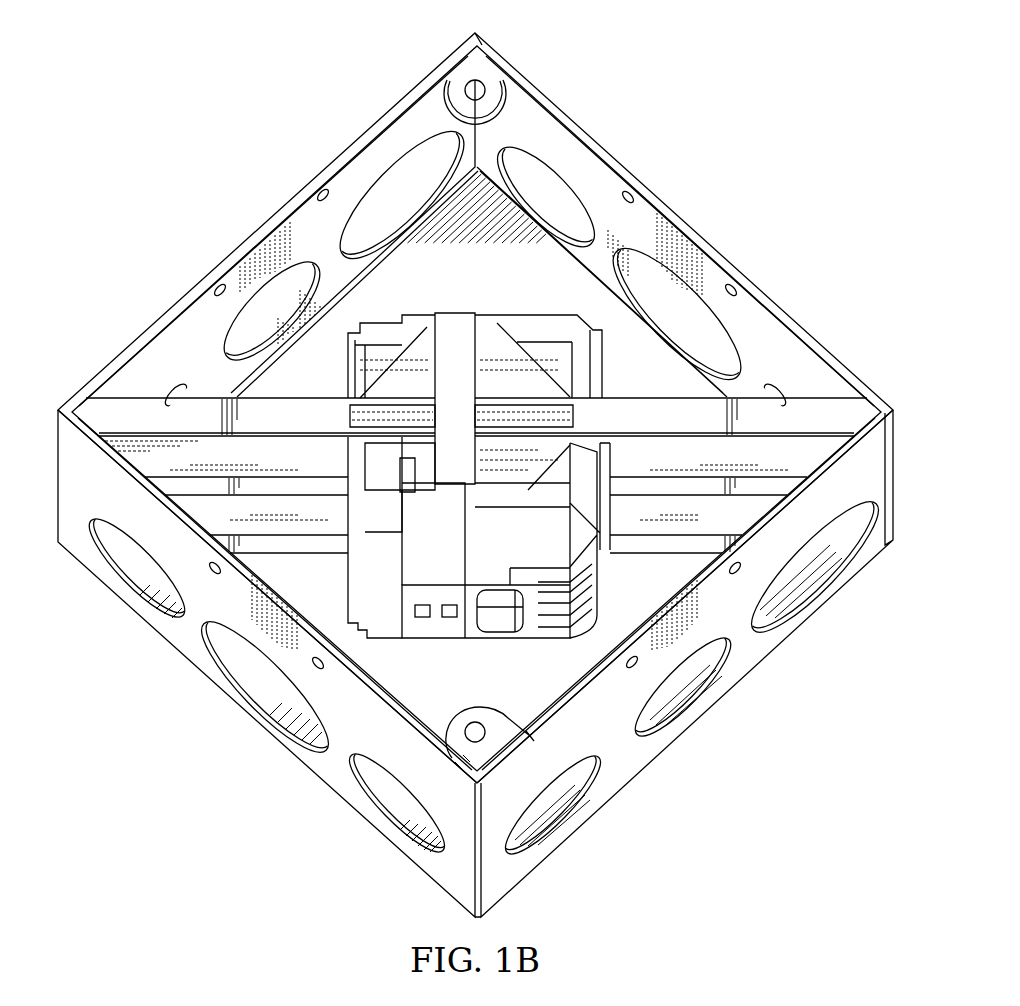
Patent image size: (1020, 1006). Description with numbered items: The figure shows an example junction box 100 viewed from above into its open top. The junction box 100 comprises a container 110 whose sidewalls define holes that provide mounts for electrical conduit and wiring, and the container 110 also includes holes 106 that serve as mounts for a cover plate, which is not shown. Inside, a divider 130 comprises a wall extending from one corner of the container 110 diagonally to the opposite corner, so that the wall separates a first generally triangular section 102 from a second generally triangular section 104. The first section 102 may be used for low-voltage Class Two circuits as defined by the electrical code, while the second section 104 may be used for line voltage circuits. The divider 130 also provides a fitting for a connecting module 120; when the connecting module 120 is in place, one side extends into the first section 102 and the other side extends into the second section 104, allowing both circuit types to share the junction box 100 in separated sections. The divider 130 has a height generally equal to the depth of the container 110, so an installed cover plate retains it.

The junction box 100 is at (481, 465).
The first section 102 is at (495, 268).
The second section 104 is at (531, 681).
The holes 106 is at (467, 82).
The container 110 is at (762, 662).
The connecting module 120 is at (538, 327).
The divider 130 is at (836, 410).